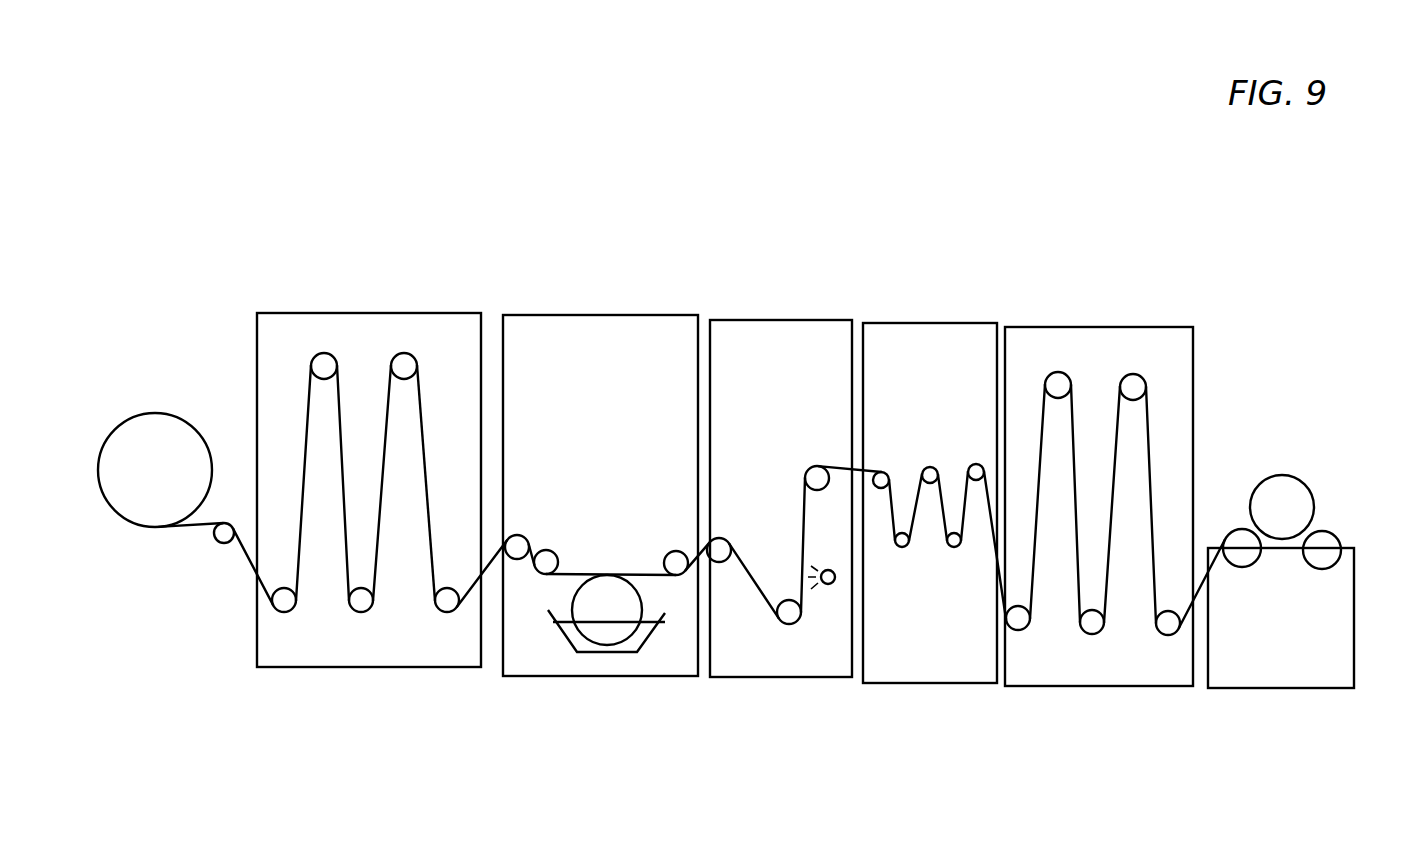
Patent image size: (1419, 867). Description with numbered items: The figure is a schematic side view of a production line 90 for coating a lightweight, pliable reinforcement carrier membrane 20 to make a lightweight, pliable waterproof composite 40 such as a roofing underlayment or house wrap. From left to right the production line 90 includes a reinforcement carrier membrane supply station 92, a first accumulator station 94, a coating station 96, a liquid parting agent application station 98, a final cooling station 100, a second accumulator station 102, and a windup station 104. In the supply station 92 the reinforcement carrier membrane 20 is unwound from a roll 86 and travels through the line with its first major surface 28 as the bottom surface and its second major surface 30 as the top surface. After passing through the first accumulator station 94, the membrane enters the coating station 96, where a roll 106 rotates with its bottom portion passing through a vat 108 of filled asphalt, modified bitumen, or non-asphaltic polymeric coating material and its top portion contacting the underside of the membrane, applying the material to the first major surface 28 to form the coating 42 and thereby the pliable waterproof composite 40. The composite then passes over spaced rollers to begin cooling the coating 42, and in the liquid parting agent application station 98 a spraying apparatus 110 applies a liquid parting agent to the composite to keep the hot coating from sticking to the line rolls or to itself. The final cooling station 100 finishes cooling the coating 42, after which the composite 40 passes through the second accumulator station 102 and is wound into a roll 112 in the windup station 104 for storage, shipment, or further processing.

The reinforcement carrier membrane 20 is at (200, 532).
The first major surface 28 is at (428, 543).
The second major surface 30 is at (428, 487).
The pliable waterproof composite 40 is at (1152, 453).
The coating 42 is at (643, 640).
The roll 86 is at (98, 443).
The production line 90 is at (1022, 252).
The reinforcement carrier membrane supply station 92 is at (173, 373).
The first accumulator station 94 is at (390, 307).
The coating station 96 is at (627, 307).
The liquid parting agent application station 98 is at (777, 310).
The final cooling station 100 is at (918, 318).
The second accumulator station 102 is at (1133, 317).
The windup station 104 is at (1320, 398).
The roll 106 is at (617, 637).
The vat 108 is at (560, 637).
The spraying apparatus 110 is at (832, 593).
The roll 112 is at (1287, 475).